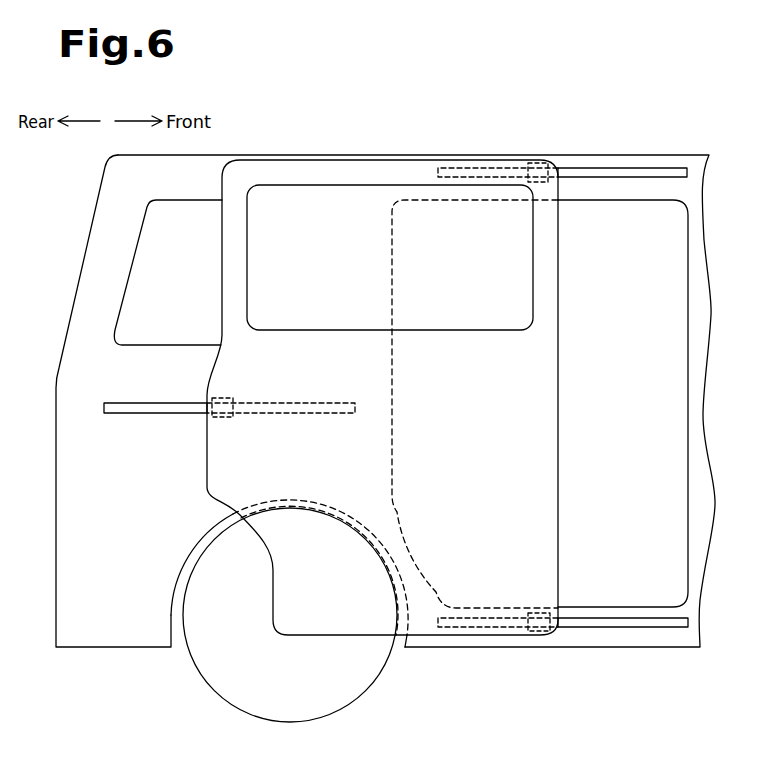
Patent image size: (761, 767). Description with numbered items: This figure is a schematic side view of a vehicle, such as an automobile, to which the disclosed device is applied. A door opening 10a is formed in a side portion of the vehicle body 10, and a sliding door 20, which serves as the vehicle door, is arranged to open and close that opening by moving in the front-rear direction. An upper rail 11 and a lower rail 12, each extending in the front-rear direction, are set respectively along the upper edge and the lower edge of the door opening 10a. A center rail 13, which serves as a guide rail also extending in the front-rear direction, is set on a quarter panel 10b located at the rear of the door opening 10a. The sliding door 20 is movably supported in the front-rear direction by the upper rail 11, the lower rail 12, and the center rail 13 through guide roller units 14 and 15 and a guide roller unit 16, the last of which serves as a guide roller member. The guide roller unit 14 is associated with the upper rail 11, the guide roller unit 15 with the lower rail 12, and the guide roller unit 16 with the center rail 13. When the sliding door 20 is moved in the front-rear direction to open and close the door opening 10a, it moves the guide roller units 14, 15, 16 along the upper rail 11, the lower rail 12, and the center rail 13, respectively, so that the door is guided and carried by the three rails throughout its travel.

The vehicle body 10 is at (228, 157).
The door opening 10a is at (687, 405).
The quarter panel 10b is at (157, 356).
The upper rail 11 is at (580, 168).
The lower rail 12 is at (600, 618).
The center rail 13 is at (131, 403).
The guide roller unit 14 is at (538, 163).
The guide roller unit 15 is at (541, 613).
The guide roller unit 16 is at (236, 389).
The sliding door 20 is at (323, 167).